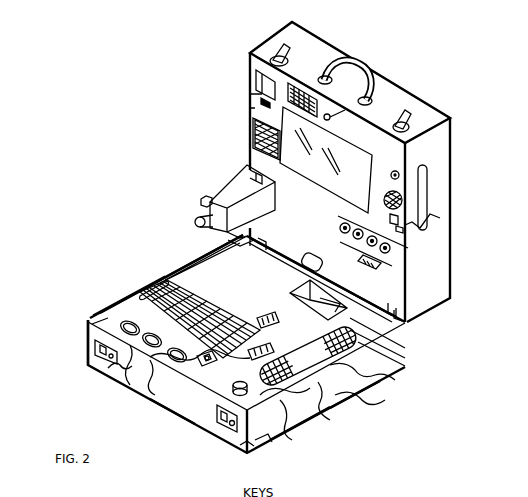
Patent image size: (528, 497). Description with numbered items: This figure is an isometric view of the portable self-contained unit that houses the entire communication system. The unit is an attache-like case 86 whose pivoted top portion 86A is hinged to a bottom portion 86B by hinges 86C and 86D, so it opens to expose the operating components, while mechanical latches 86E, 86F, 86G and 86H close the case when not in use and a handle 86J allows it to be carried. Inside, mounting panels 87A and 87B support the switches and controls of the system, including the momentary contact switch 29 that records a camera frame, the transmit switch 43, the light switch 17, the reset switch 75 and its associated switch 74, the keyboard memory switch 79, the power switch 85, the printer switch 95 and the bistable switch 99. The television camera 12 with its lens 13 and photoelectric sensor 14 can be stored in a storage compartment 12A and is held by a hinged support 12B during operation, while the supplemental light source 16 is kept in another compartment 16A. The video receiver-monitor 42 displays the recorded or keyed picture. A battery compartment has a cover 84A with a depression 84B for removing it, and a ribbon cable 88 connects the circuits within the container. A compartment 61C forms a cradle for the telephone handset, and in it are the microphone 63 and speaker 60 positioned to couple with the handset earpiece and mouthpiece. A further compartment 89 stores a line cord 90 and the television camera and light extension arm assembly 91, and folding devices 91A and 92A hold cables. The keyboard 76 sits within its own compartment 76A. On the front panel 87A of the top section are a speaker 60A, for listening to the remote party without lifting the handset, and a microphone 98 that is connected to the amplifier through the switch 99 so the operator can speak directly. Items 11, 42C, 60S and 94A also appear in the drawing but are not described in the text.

The base housing 11 is at (270, 433).
The television camera 12 is at (225, 184).
The storage compartment 12A is at (392, 250).
The hinged support 12B is at (247, 170).
The lens 13 is at (195, 222).
The photoelectric sensor 14 is at (202, 202).
The supplemental light source 16 is at (255, 138).
The compartment 16A is at (254, 123).
The manual switch 17 is at (260, 101).
The momentary contact switch 29 is at (90, 322).
The video receiver-monitor 42 is at (450, 138).
The display connector 42C is at (382, 263).
The transmit switch 43 is at (110, 371).
The speaker 60 is at (383, 375).
The speaker 60A is at (302, 84).
The lid top surface 60S is at (360, 110).
The compartment 61C is at (340, 398).
The microphone 63 is at (300, 427).
The switch 74 is at (155, 394).
The manually operated switch 75 is at (130, 384).
The keyboard 76 is at (145, 318).
The compartment 76A is at (115, 320).
The switch 79 is at (173, 410).
The cover 84A is at (178, 275).
The depression 84B is at (170, 283).
The manual switch 85 is at (396, 278).
The attache-like case 86 is at (80, 361).
The pivoted top portion 86A is at (440, 218).
The bottom portion 86B is at (272, 442).
The hinge 86C is at (410, 312).
The hinge 86D is at (226, 242).
The mechanical latch 86E is at (290, 52).
The mechanical latch 86F is at (95, 347).
The mechanical latch 86G is at (405, 117).
The mechanical latch 86H is at (245, 448).
The handle 86J is at (366, 80).
The mounting panel 87A is at (400, 218).
The mounting panel 87B is at (217, 426).
The ribbon cable 88 is at (350, 302).
The compartment 89 is at (405, 345).
The line cord 90 is at (405, 363).
The television camera and light extension arm assembly 91 is at (405, 355).
The folding device 91A is at (256, 78).
The folding device 92A is at (145, 294).
The speaker 94A is at (403, 198).
The switch 95 is at (400, 175).
The microphone 98 is at (428, 186).
The bistable switch 99 is at (404, 229).